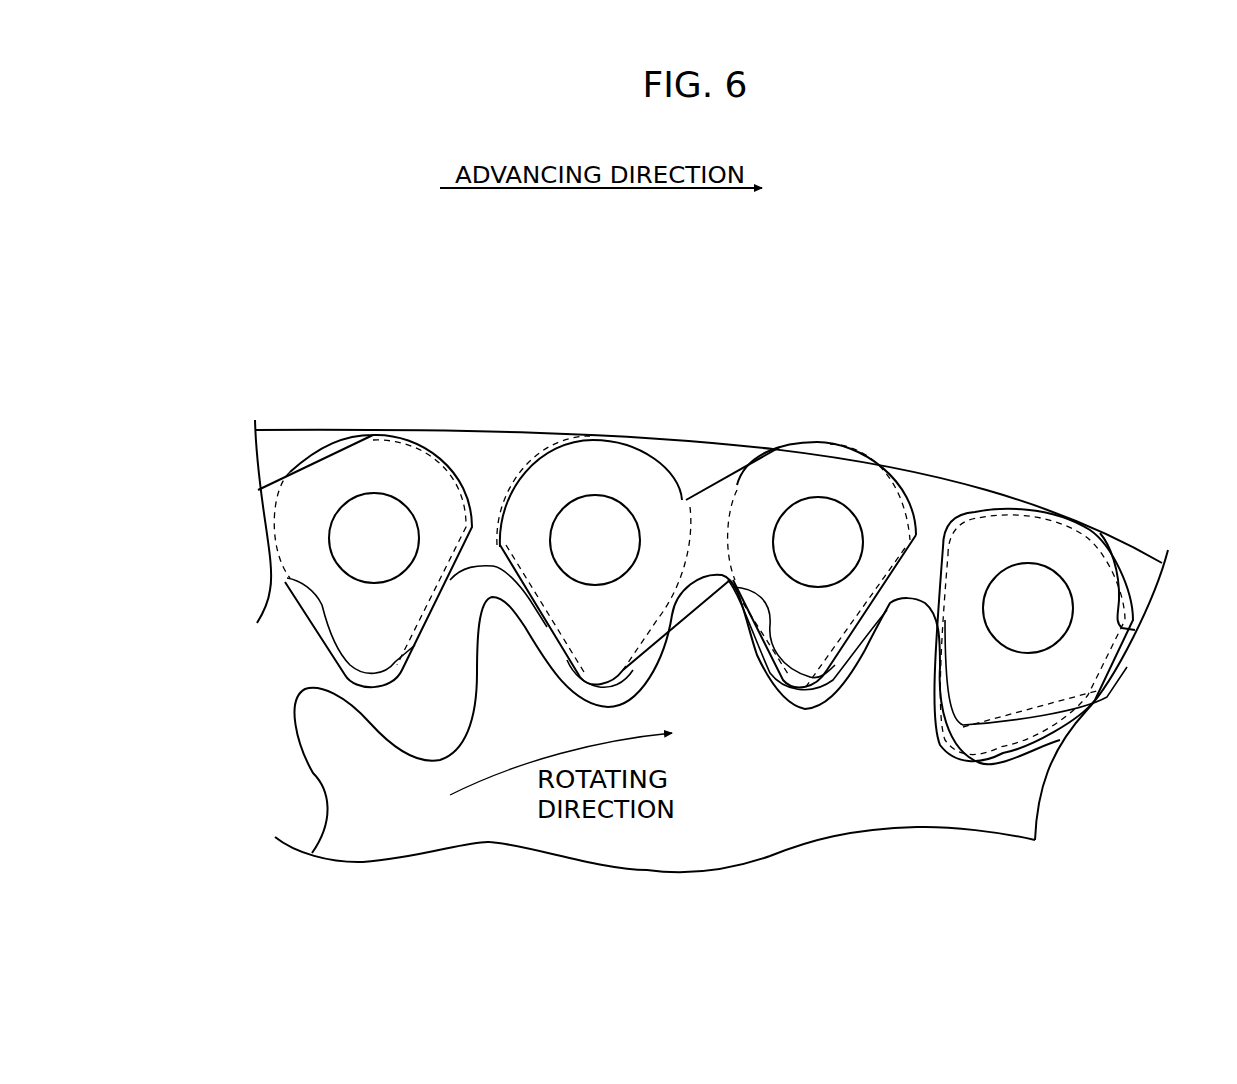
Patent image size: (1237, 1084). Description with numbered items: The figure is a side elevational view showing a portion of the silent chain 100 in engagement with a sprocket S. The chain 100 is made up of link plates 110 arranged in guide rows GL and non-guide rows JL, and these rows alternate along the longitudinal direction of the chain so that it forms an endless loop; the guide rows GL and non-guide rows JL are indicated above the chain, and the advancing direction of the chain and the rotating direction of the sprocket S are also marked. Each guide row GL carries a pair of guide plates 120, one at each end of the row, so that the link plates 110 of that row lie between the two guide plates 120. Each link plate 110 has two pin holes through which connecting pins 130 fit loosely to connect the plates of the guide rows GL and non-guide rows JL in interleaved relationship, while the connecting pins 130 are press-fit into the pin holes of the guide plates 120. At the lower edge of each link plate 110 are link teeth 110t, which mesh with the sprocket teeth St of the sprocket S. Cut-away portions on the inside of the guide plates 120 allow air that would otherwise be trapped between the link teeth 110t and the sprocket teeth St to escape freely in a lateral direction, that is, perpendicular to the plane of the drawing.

The silent chain 100 is at (1008, 240).
The link plate 110 is at (285, 445).
The link tooth 110t is at (818, 688).
The guide plate 120 is at (257, 500).
The connecting pin 130 is at (376, 515).
The sprocket S is at (912, 803).
The sprocket tooth St is at (312, 727).
The guide row GL is at (303, 326).
The non-guide row JL is at (485, 326).